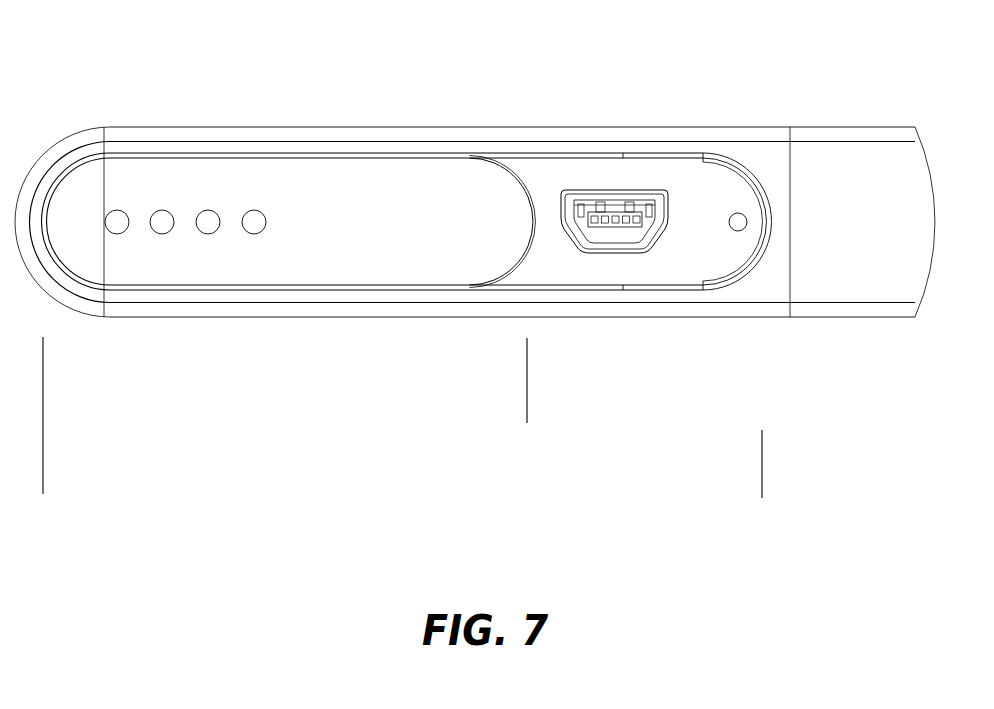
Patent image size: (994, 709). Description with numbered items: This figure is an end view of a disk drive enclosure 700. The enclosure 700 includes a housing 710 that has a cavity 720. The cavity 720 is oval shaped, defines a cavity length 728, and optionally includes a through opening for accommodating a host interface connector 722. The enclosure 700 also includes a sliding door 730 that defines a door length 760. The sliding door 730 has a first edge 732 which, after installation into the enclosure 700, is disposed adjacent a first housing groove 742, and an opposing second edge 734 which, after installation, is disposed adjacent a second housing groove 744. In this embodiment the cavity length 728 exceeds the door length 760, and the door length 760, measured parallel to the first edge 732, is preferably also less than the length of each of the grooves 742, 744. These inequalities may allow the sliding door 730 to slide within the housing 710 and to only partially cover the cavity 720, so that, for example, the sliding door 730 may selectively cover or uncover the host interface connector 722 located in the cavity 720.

The disk drive enclosure 700 is at (231, 80).
The housing 710 is at (273, 133).
The cavity 720 is at (728, 209).
The host interface connector 722 is at (604, 215).
The cavity length 728 is at (762, 465).
The sliding door 730 is at (490, 237).
The first edge 732 is at (365, 160).
The second edge 734 is at (302, 284).
The first housing groove 742 is at (542, 153).
The second housing groove 744 is at (598, 290).
The door length 760 is at (527, 364).